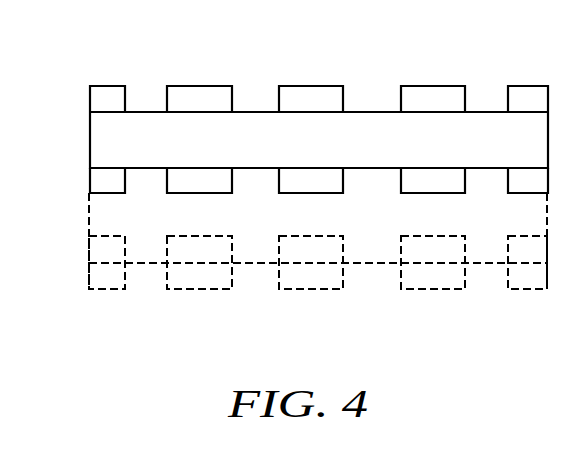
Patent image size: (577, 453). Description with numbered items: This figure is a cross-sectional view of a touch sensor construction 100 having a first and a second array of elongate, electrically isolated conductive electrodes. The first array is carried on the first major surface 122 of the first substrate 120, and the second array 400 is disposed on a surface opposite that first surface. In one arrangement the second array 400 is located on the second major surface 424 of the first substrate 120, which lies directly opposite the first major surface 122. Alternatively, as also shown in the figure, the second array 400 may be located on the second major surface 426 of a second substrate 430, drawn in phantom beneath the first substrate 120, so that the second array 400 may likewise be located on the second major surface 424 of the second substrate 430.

The semiconductor device 100 is at (203, 95).
The first substrate 120 is at (105, 138).
The first major surface 122 is at (258, 123).
The second major surface 424 is at (147, 170).
The second major surface 426 is at (142, 262).
The second substrate 430 is at (372, 216).
The second array 400 is at (433, 180).